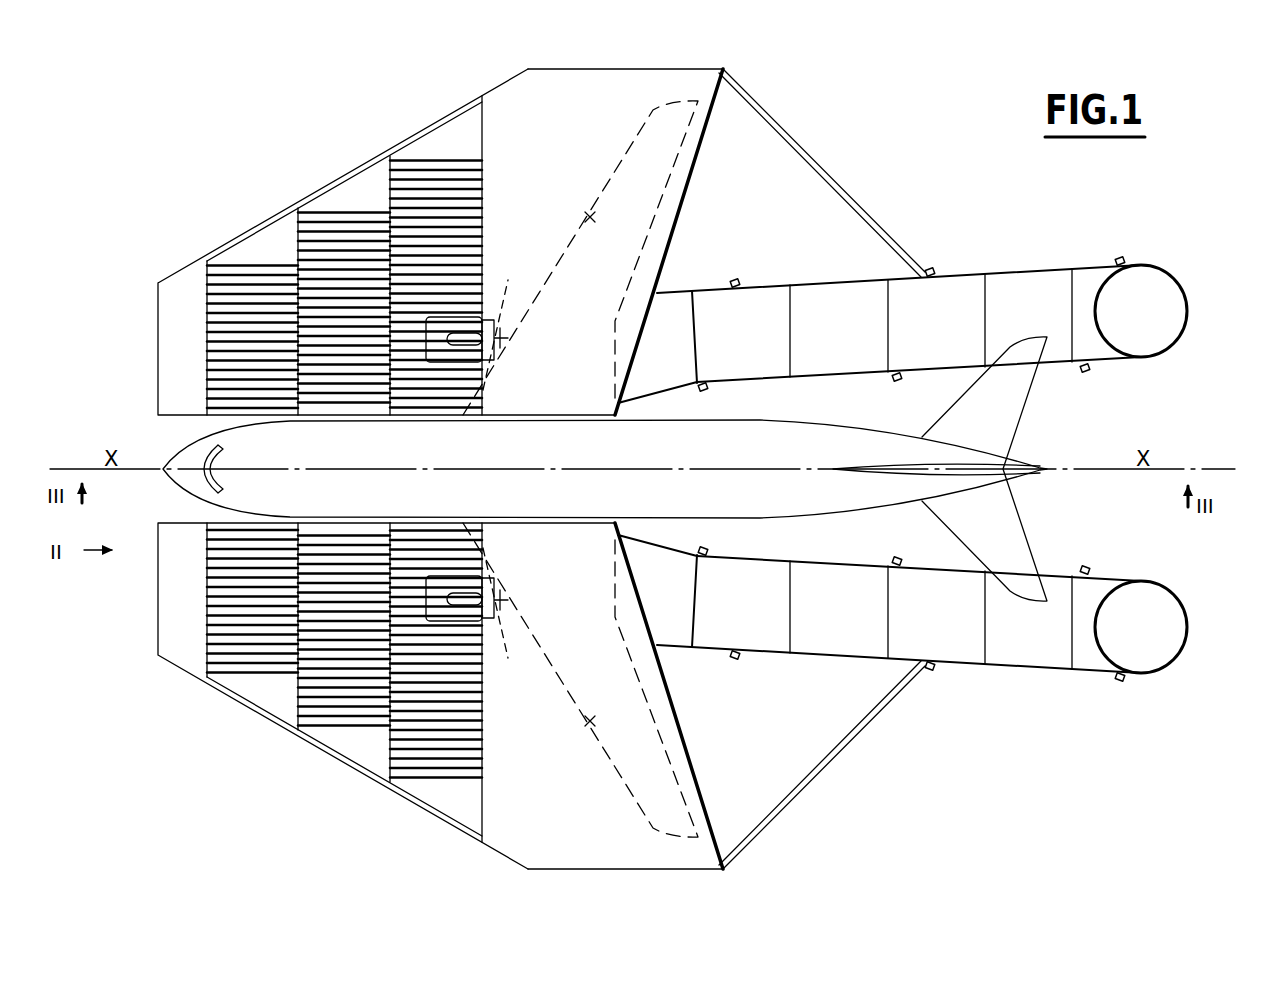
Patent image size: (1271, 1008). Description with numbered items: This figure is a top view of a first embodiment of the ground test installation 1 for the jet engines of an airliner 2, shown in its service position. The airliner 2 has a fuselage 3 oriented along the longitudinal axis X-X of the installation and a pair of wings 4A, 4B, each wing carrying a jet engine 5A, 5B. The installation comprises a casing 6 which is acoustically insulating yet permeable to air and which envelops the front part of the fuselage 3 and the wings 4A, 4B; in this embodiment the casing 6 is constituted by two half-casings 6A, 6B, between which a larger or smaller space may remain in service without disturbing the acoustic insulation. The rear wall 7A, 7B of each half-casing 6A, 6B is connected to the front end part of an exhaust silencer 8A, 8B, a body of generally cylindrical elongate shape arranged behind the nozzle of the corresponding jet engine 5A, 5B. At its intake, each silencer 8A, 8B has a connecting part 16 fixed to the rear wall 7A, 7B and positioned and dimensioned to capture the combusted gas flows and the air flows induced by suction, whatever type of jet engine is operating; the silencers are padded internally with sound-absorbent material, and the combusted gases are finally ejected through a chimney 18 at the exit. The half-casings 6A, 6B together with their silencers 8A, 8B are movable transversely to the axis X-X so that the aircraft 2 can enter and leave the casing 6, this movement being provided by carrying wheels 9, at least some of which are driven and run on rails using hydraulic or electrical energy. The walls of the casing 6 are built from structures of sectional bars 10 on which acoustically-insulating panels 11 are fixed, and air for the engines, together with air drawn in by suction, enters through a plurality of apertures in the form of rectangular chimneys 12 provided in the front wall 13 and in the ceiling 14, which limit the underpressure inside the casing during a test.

The ground test installation 1 is at (882, 198).
The airliner 2 is at (207, 438).
The fuselage 3 is at (539, 459).
The wing 4A is at (589, 216).
The wing 4B is at (590, 722).
The jet engine 5A is at (475, 321).
The jet engine 5B is at (475, 619).
The casing 6 is at (415, 469).
The half-casing 6A is at (150, 299).
The half-casing 6B is at (215, 704).
The rear wall 7A is at (689, 186).
The rear wall 7B is at (672, 698).
The exhaust silencer 8A is at (974, 276).
The exhaust silencer 8B is at (969, 668).
The carrying wheels 9 is at (712, 389).
The sectional bars 10 is at (846, 748).
The acoustically-insulating panels 11 is at (360, 166).
The rectangular chimneys 12 is at (260, 272).
The front wall 13 is at (157, 385).
The ceiling 14 is at (442, 148).
The connecting part 16 is at (672, 308).
The chimney 18 is at (1152, 290).